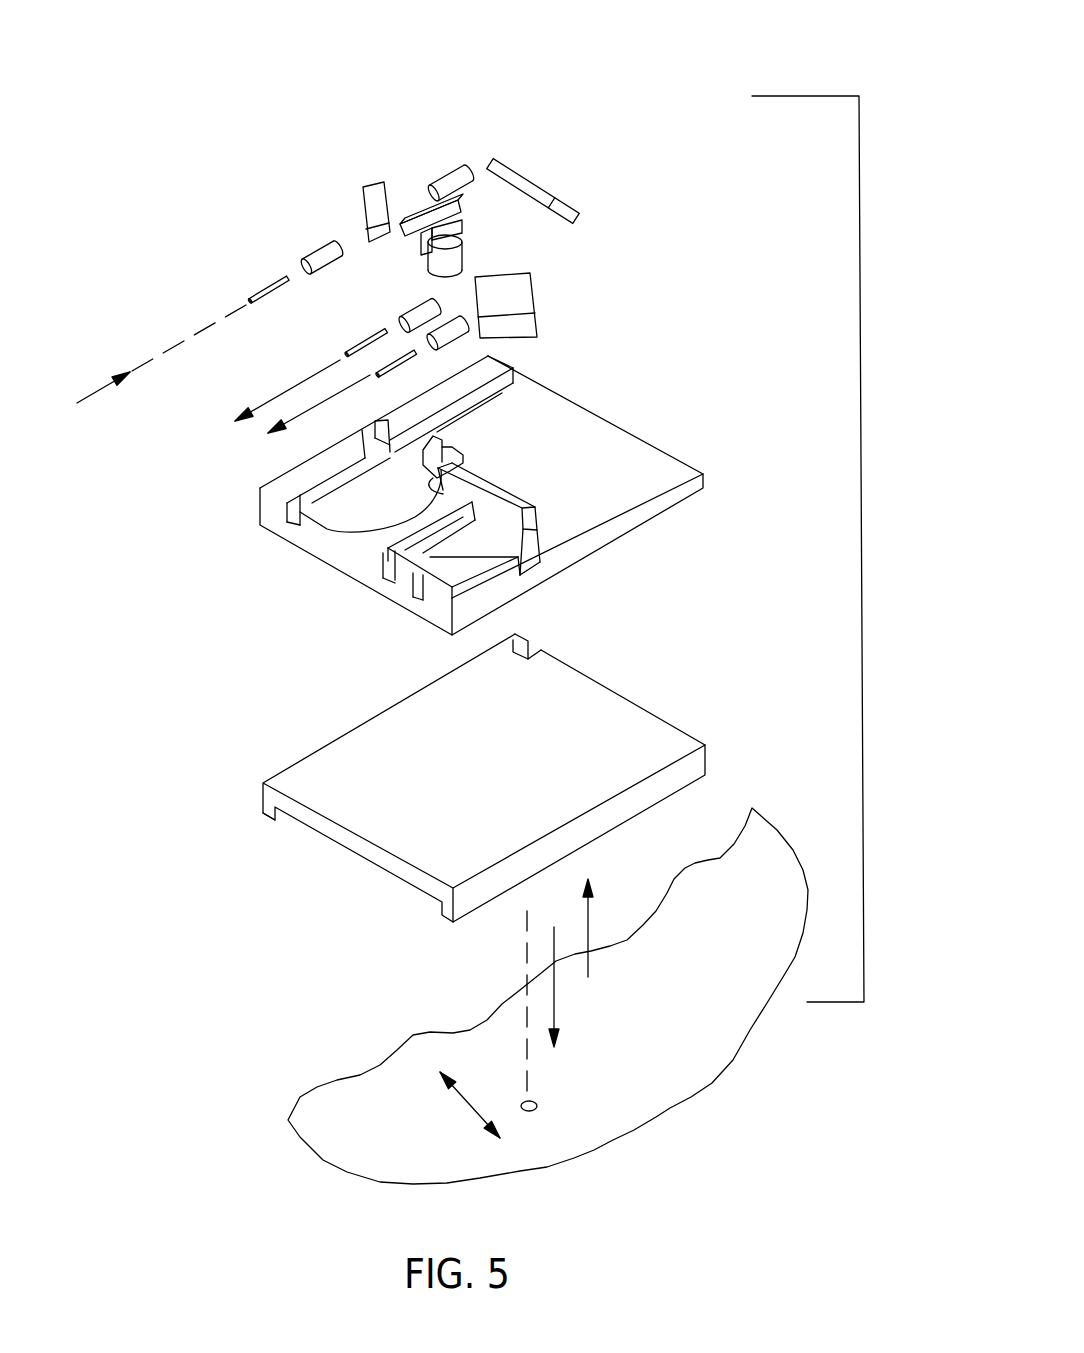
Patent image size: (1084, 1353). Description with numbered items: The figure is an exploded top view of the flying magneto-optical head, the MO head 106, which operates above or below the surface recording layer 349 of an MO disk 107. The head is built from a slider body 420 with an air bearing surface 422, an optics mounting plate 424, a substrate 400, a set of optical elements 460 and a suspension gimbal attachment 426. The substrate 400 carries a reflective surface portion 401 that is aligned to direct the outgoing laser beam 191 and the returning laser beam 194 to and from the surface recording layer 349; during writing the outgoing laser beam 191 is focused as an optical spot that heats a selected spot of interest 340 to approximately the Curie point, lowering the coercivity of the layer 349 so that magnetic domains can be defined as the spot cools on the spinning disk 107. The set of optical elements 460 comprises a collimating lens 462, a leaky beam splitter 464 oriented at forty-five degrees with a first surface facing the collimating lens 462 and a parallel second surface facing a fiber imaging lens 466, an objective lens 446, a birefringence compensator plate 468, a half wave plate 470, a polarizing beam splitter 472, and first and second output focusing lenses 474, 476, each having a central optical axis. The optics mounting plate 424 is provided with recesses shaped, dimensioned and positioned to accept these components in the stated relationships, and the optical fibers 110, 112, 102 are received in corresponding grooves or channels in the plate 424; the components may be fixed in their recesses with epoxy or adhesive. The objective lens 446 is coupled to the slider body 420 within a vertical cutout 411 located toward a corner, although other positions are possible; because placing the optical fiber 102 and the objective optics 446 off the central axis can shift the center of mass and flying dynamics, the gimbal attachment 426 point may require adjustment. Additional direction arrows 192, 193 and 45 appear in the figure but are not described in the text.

The set of optical elements 460 is at (270, 72).
The fiber imaging lens 466 is at (443, 180).
The birefringence compensator plate 468 is at (459, 216).
The leaky beam splitter 464 is at (363, 190).
The substrate 400 is at (534, 185).
The reflective surface portion 401 is at (548, 208).
The collimating lens 462 is at (321, 247).
The optical fiber 102 is at (273, 290).
The half wave plate 470 is at (421, 250).
The objective lens 446 is at (465, 257).
The second output focusing lens 476 is at (404, 312).
The first output focusing lens 474 is at (463, 340).
The polarizing beam splitter 472 is at (537, 307).
The optical fiber 110 is at (355, 350).
The optical fiber 112 is at (393, 380).
The outgoing laser beam 191 is at (97, 393).
The light direction arrow 192 is at (300, 382).
The light direction arrow 193 is at (303, 415).
The optics mounting plate 424 is at (618, 527).
The suspension gimbal attachment 426 is at (312, 528).
The slider body 420 is at (694, 766).
The cutout 411 is at (533, 653).
The air bearing surface 422 is at (268, 817).
The returning laser beam 194 is at (588, 920).
The MO disk 107 is at (579, 1154).
The surface recording layer 349 is at (586, 1133).
The selected spot of interest 340 is at (537, 1110).
The scan direction 45 is at (463, 1102).
The MO head 106 is at (818, 567).